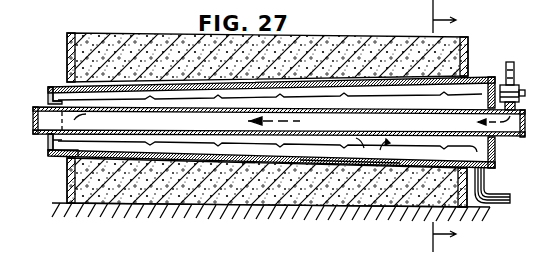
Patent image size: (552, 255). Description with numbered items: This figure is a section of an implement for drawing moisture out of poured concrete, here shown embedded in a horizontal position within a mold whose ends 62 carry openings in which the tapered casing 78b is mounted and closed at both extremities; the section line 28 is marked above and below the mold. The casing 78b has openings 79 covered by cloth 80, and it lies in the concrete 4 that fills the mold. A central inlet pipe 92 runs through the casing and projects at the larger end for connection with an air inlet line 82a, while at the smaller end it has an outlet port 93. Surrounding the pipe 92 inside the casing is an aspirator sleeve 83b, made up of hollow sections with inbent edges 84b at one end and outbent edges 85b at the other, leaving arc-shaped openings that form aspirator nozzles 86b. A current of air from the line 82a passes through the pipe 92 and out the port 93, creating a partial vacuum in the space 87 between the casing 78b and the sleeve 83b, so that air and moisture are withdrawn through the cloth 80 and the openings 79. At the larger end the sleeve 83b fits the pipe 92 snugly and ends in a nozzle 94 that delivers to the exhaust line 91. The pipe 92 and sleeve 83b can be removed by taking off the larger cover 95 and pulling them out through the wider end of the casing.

The lower insulation block 4 is at (207, 215).
The section line 28 is at (444, 127).
The ends of the mold 62 is at (491, 77).
The casing 78b is at (46, 92).
The openings 79 is at (273, 159).
The cloth 80 is at (63, 158).
The air inlet line 82a is at (530, 49).
The aspirator sleeve 83b is at (358, 170).
The inbent edges 84b is at (345, 103).
The outbent edges 85b is at (147, 143).
The aspirator nozzles 86b is at (147, 97).
The space 87 is at (188, 88).
The exhaust line 91 is at (506, 194).
The central inlet pipe 92 is at (357, 138).
The outlet port 93 is at (78, 160).
The nozzle 94 is at (495, 150).
The larger cover 95 is at (523, 138).